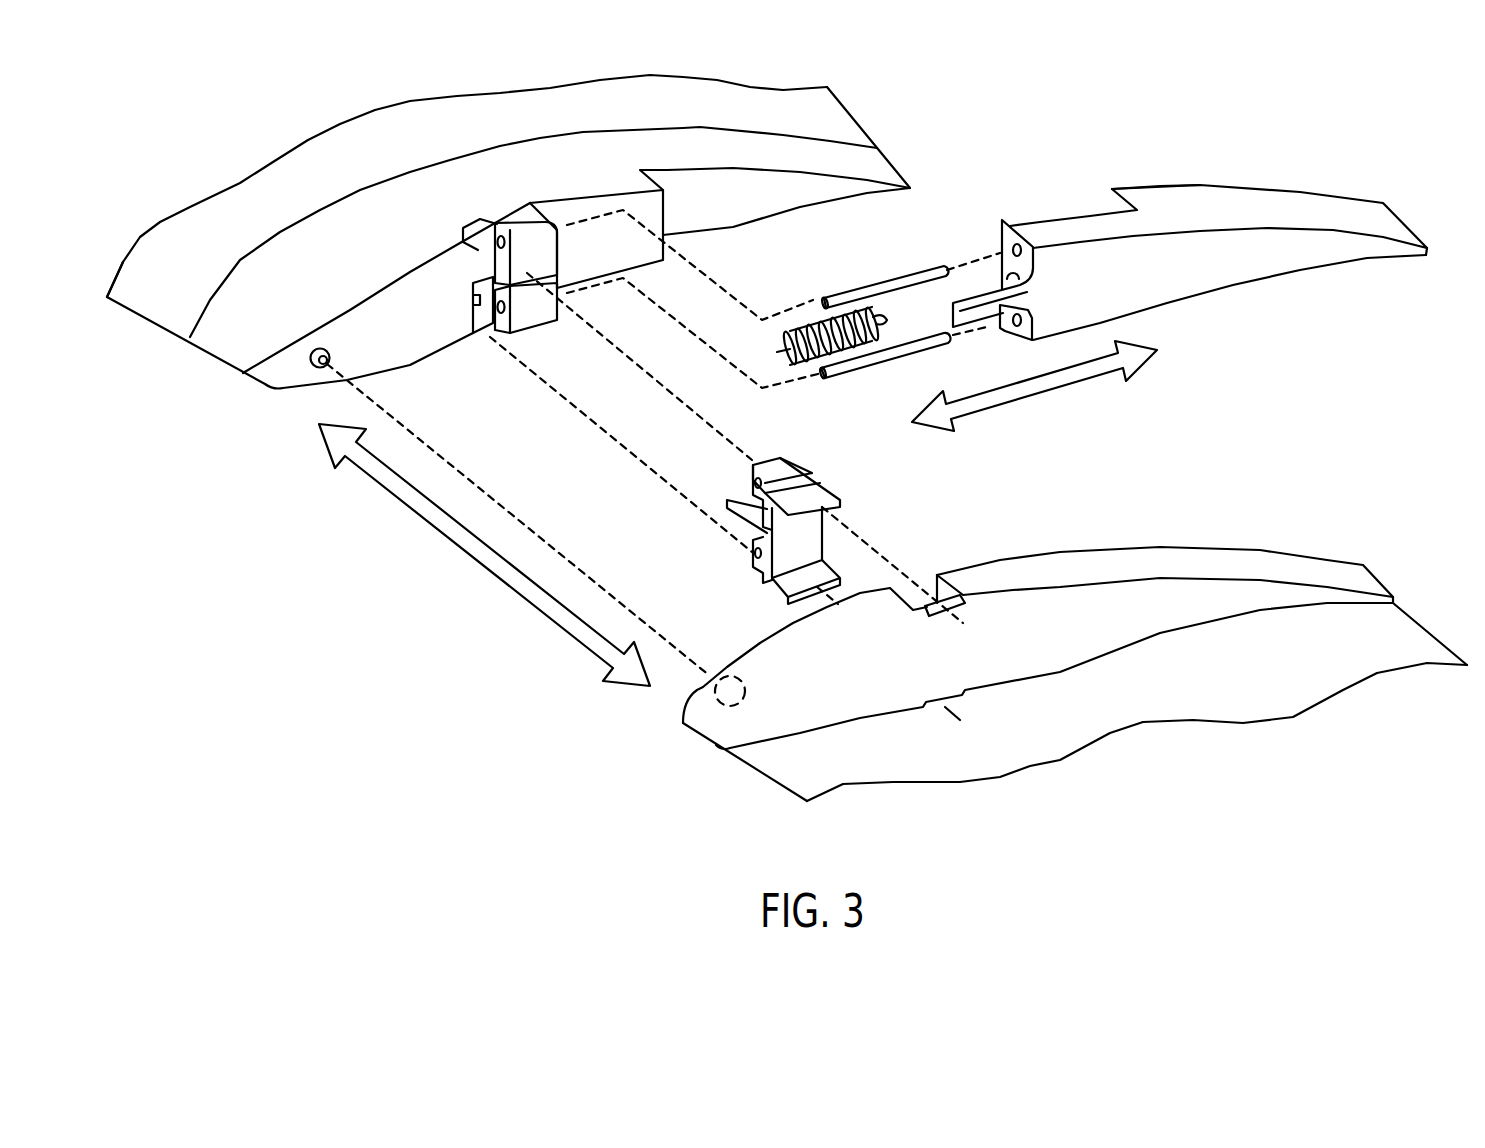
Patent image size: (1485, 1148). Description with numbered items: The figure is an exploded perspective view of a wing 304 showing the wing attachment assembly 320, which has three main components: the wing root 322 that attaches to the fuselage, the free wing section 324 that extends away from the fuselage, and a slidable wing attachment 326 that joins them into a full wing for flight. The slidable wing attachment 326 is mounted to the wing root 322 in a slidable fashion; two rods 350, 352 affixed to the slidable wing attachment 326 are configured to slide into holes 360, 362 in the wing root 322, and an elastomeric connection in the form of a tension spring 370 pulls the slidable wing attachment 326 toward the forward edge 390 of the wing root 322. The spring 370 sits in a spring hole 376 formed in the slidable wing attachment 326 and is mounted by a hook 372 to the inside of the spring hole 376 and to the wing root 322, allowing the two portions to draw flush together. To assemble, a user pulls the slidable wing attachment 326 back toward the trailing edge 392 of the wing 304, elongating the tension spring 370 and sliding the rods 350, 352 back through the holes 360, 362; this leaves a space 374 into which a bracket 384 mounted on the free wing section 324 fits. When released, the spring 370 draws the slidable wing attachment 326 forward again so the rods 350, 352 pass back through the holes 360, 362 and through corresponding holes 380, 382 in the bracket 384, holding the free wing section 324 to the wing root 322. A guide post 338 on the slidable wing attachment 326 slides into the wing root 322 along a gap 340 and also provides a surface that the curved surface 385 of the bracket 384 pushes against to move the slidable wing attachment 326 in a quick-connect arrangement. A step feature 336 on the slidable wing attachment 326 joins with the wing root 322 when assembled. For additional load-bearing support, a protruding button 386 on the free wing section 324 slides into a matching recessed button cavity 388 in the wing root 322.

The wing 304 is at (513, 860).
The wing attachment assembly 320 is at (700, 784).
The wing root 322 is at (508, 232).
The free wing section 324 is at (1075, 674).
The slidable wing attachment 326 is at (1218, 262).
The step feature 336 is at (1138, 167).
The guide post 338 is at (988, 328).
The gap 340 is at (514, 284).
The rod 350 is at (828, 375).
The rod 352 is at (870, 292).
The hole 360 is at (492, 335).
The hole 362 is at (495, 224).
The tension spring 370 is at (797, 318).
The hook 372 is at (880, 320).
The space 374 is at (470, 224).
The spring hole 376 is at (1003, 255).
The hole 380 is at (775, 524).
The hole 382 is at (752, 560).
The bracket 384 is at (842, 497).
The curved surface 385 is at (752, 490).
The protruding button 386 is at (722, 702).
The recessed button cavity 388 is at (311, 359).
The forward edge 390 is at (105, 303).
The trailing edge 392 is at (860, 97).